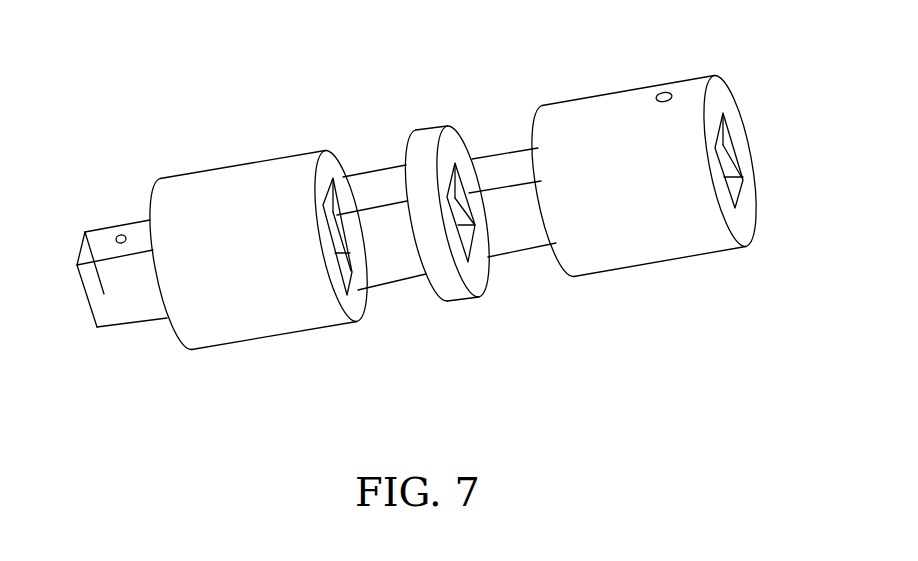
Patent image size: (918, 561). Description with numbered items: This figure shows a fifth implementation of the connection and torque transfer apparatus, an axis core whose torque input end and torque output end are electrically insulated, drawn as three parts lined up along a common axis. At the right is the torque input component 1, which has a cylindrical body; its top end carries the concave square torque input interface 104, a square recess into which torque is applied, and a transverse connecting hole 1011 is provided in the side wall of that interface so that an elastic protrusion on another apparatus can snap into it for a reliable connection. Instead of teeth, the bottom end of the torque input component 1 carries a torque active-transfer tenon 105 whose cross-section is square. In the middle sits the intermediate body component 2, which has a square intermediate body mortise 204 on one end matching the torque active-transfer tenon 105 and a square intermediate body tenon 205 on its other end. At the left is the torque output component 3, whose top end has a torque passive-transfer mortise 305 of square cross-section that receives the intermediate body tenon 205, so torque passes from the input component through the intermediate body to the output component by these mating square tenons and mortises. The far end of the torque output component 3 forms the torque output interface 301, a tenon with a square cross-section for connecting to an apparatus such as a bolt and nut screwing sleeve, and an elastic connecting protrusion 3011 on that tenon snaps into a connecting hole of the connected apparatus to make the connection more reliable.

The torque input component 1 is at (680, 196).
The concave square torque input interface 104 is at (729, 160).
The connecting hole 1011 is at (665, 92).
The torque active-transfer tenon 105 is at (500, 170).
The intermediate body component 2 is at (432, 228).
The intermediate body mortise 204 is at (455, 165).
The intermediate body tenon 205 is at (370, 187).
The torque output component 3 is at (263, 255).
The torque passive-transfer mortise 305 is at (316, 170).
The torque output interface 301 is at (85, 232).
The connecting protrusion 3011 is at (122, 234).